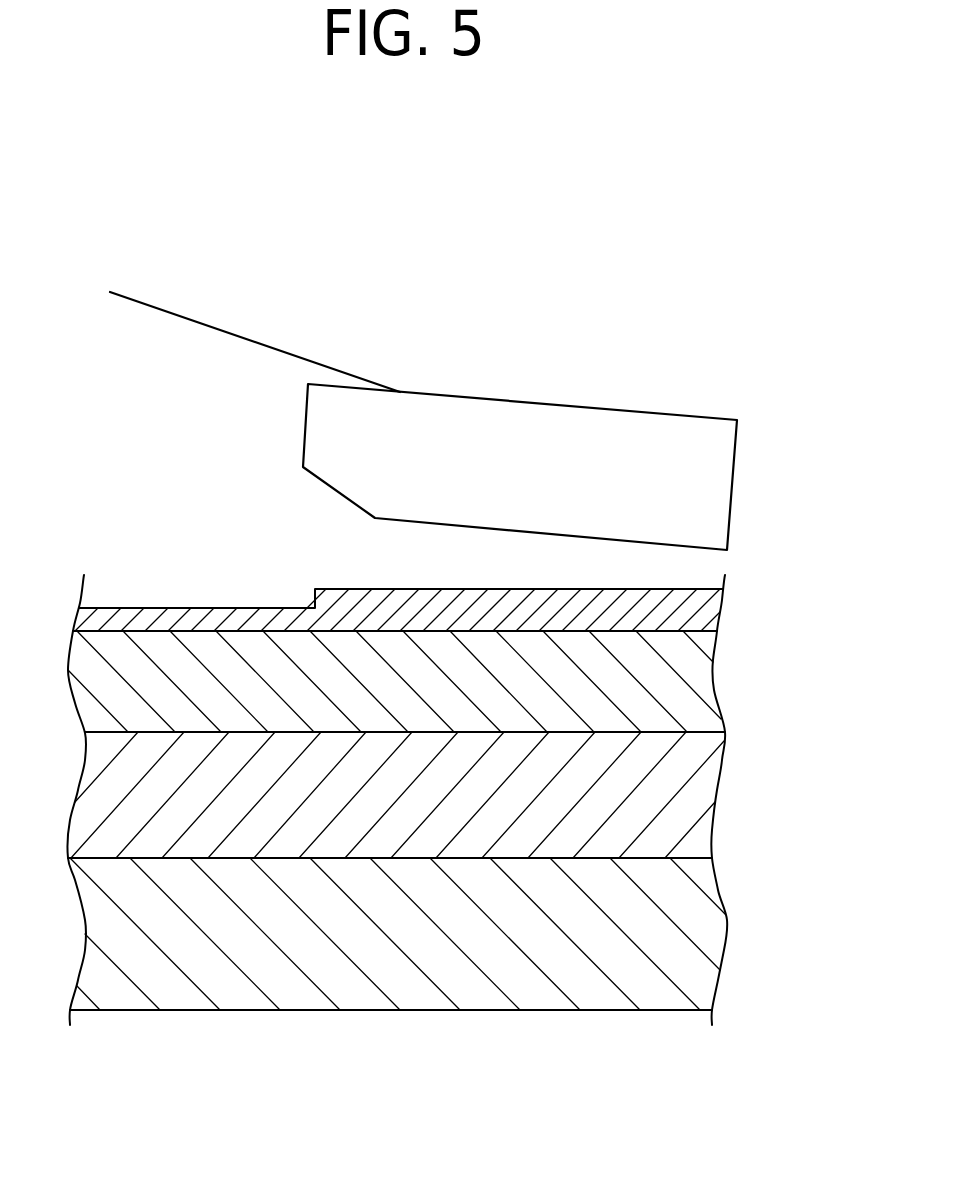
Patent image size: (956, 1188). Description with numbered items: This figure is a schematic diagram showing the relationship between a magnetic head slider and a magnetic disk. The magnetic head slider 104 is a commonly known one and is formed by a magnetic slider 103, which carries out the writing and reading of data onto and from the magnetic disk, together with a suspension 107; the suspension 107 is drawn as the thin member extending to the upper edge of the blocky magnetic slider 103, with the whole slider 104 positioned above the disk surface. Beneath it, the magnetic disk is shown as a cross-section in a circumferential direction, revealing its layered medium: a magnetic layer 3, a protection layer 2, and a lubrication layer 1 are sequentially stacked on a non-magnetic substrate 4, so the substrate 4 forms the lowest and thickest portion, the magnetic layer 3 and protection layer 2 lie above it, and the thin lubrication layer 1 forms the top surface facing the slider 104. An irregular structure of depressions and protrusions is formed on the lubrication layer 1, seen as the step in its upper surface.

The lubrication layer 1 is at (703, 612).
The protection layer 2 is at (703, 680).
The magnetic layer 3 is at (703, 790).
The non-magnetic substrate 4 is at (703, 932).
The magnetic slider 103 is at (530, 427).
The magnetic head slider 104 is at (573, 229).
The suspension 107 is at (324, 363).